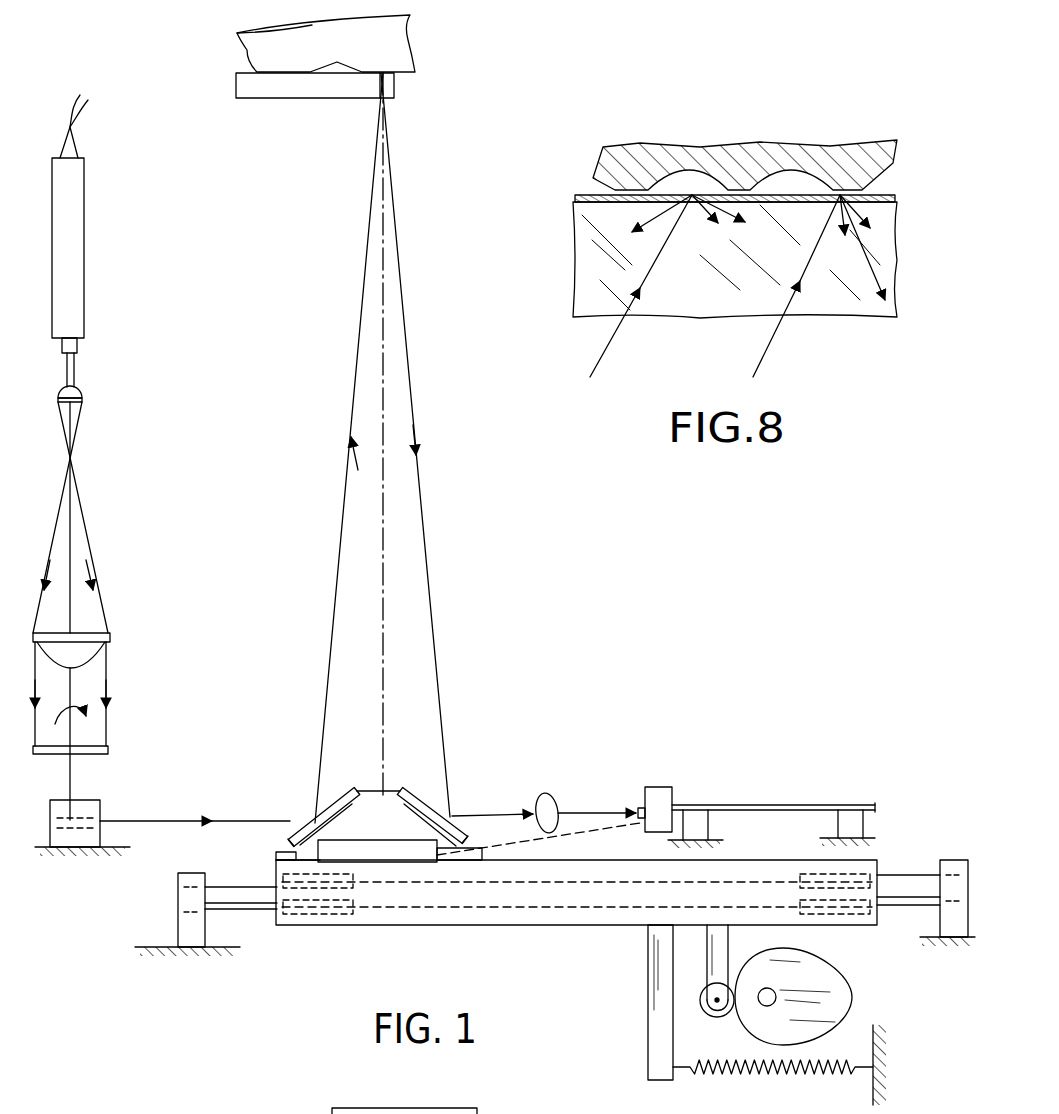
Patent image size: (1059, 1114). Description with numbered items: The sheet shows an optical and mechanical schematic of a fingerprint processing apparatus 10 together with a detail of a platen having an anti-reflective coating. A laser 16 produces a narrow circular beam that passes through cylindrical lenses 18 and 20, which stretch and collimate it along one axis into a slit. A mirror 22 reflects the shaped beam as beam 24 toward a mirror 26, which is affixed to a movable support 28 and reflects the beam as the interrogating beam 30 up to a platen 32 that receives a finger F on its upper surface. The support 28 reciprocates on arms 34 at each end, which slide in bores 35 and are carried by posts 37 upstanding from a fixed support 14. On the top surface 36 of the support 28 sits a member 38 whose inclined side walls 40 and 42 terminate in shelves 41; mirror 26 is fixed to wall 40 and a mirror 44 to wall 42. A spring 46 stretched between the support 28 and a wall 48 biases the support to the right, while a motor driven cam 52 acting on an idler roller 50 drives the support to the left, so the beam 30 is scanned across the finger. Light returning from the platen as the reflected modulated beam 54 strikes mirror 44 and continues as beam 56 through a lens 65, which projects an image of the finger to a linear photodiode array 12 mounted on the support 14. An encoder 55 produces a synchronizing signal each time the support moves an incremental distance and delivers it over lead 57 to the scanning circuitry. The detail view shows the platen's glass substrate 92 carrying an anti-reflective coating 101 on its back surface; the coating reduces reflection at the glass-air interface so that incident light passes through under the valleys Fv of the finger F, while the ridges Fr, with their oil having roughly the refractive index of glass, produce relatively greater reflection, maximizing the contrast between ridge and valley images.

In FIG. 1, the fingerprint processing apparatus 10 is at (489, 716).
In FIG. 1, the linear photodiode array 12 is at (664, 781).
In FIG. 1, the support 14 is at (100, 850).
In FIG. 1, the laser 16 is at (78, 243).
In FIG. 1, the cylindrical lens 18 is at (82, 400).
In FIG. 1, the cylindrical lens 20 is at (105, 651).
In FIG. 1, the mirror 22 is at (95, 806).
In FIG. 1, the light beam 24 is at (246, 820).
In FIG. 1, the mirror 26 is at (336, 803).
In FIG. 1, the movable support 28 is at (468, 921).
In FIG. 1, the interrogating beam 30 is at (343, 498).
In FIG. 1, the platen 32 is at (243, 88).
In FIG. 1, the arm 34 is at (257, 912).
In FIG. 1, the bore 35 is at (355, 927).
In FIG. 1, the top surface 36 is at (278, 858).
In FIG. 1, the post 37 is at (196, 857).
In FIG. 1, the member 38 is at (394, 791).
In FIG. 1, the side wall 40 is at (348, 808).
In FIG. 1, the shelf 41 is at (288, 836).
In FIG. 1, the side wall 42 is at (427, 820).
In FIG. 1, the mirror 44 is at (428, 803).
In FIG. 1, the spring 46 is at (728, 1073).
In FIG. 1, the wall 48 is at (878, 1087).
In FIG. 1, the idler roller 50 is at (705, 1008).
In FIG. 1, the motor driven cam 52 is at (837, 976).
In FIG. 1, the reflected modulated beam 54 is at (422, 488).
In FIG. 1, the encoder 55 is at (407, 862).
In FIG. 1, the modulated slit light beam 56 is at (610, 800).
In FIG. 1, the lead 57 is at (582, 838).
In FIG. 1, the lens 65 is at (555, 797).
In FIG. 8, the glass substrate 92 is at (892, 277).
In FIG. 8, the anti-reflective coating 101 is at (897, 197).
In FIG. 1, the finger F is at (397, 33).
In FIG. 8, the finger F is at (885, 147).
In FIG. 8, the finger ridge Fr is at (648, 190).
In FIG. 8, the valley zone Fv is at (710, 180).